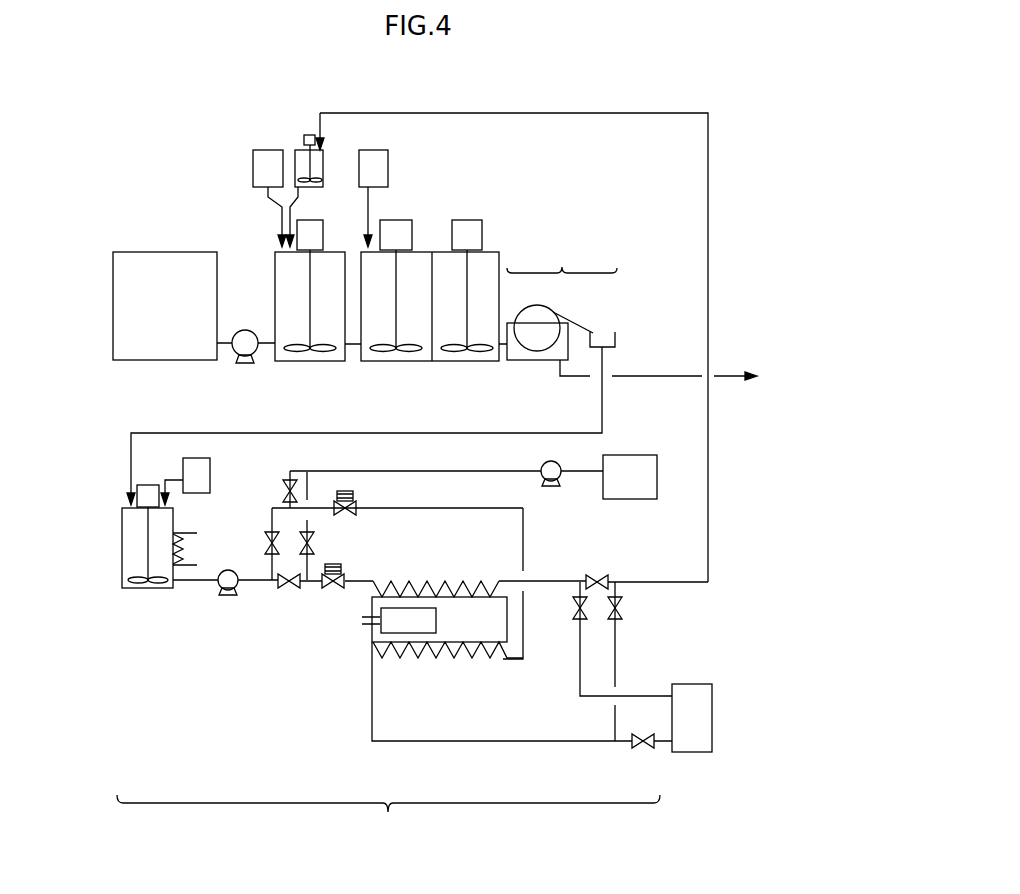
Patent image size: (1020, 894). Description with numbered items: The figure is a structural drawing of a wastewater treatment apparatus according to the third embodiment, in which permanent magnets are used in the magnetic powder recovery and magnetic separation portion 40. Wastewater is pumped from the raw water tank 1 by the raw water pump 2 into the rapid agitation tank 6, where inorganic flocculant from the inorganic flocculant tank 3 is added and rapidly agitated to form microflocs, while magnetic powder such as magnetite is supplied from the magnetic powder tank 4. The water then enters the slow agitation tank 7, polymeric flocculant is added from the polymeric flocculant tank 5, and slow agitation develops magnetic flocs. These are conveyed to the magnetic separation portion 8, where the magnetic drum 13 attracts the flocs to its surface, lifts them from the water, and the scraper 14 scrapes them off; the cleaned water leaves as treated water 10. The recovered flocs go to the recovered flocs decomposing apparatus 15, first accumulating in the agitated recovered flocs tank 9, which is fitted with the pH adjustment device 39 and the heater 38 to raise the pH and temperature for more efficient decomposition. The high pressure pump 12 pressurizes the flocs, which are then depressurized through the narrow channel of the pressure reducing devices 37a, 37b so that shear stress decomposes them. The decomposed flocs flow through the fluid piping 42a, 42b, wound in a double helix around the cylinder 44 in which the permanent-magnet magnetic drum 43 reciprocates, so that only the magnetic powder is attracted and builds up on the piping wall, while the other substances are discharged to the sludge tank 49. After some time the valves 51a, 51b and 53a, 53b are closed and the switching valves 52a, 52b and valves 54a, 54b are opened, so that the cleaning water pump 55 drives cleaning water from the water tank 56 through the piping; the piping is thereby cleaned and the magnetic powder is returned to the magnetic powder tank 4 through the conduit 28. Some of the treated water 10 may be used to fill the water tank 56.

The raw water tank 1 is at (132, 263).
The raw water pump 2 is at (243, 350).
The inorganic flocculant tank 3 is at (260, 162).
The magnetic powder tank 4 is at (300, 153).
The polymeric flocculant tank 5 is at (383, 165).
The rapid agitation tank 6 is at (337, 345).
The slow agitation tank 7 is at (425, 343).
The magnetic separation portion 8 is at (550, 258).
The recovered flocs tank 9 is at (130, 542).
The treated water 10 is at (752, 377).
The high pressure pump 12 is at (218, 588).
The magnetic drum 13 is at (528, 345).
The scraper 14 is at (582, 321).
The recovered flocs decomposing apparatus 15 is at (375, 847).
The conduit 28 is at (708, 226).
The pressure reducing device 37a is at (354, 497).
The pressure reducing device 37b is at (343, 563).
The heater 38 is at (197, 549).
The pH adjustment device 39 is at (210, 474).
The magnetic powder recovery and magnetic separation portion 40 is at (413, 703).
The fluid piping 42a is at (465, 647).
The fluid piping 42b is at (430, 567).
The magnetic drum 43 is at (383, 628).
The cylinder 44 is at (365, 620).
The sludge tank 49 is at (708, 698).
The valve 51a is at (267, 534).
The valve 51b is at (290, 588).
The switching valve 52a is at (288, 480).
The switching valve 52b is at (312, 538).
The valve 53a is at (648, 750).
The valve 53b is at (573, 617).
The valve 54a is at (622, 614).
The valve 54b is at (603, 573).
The cleaning water pump 55 is at (558, 479).
The water tank 56 is at (642, 462).